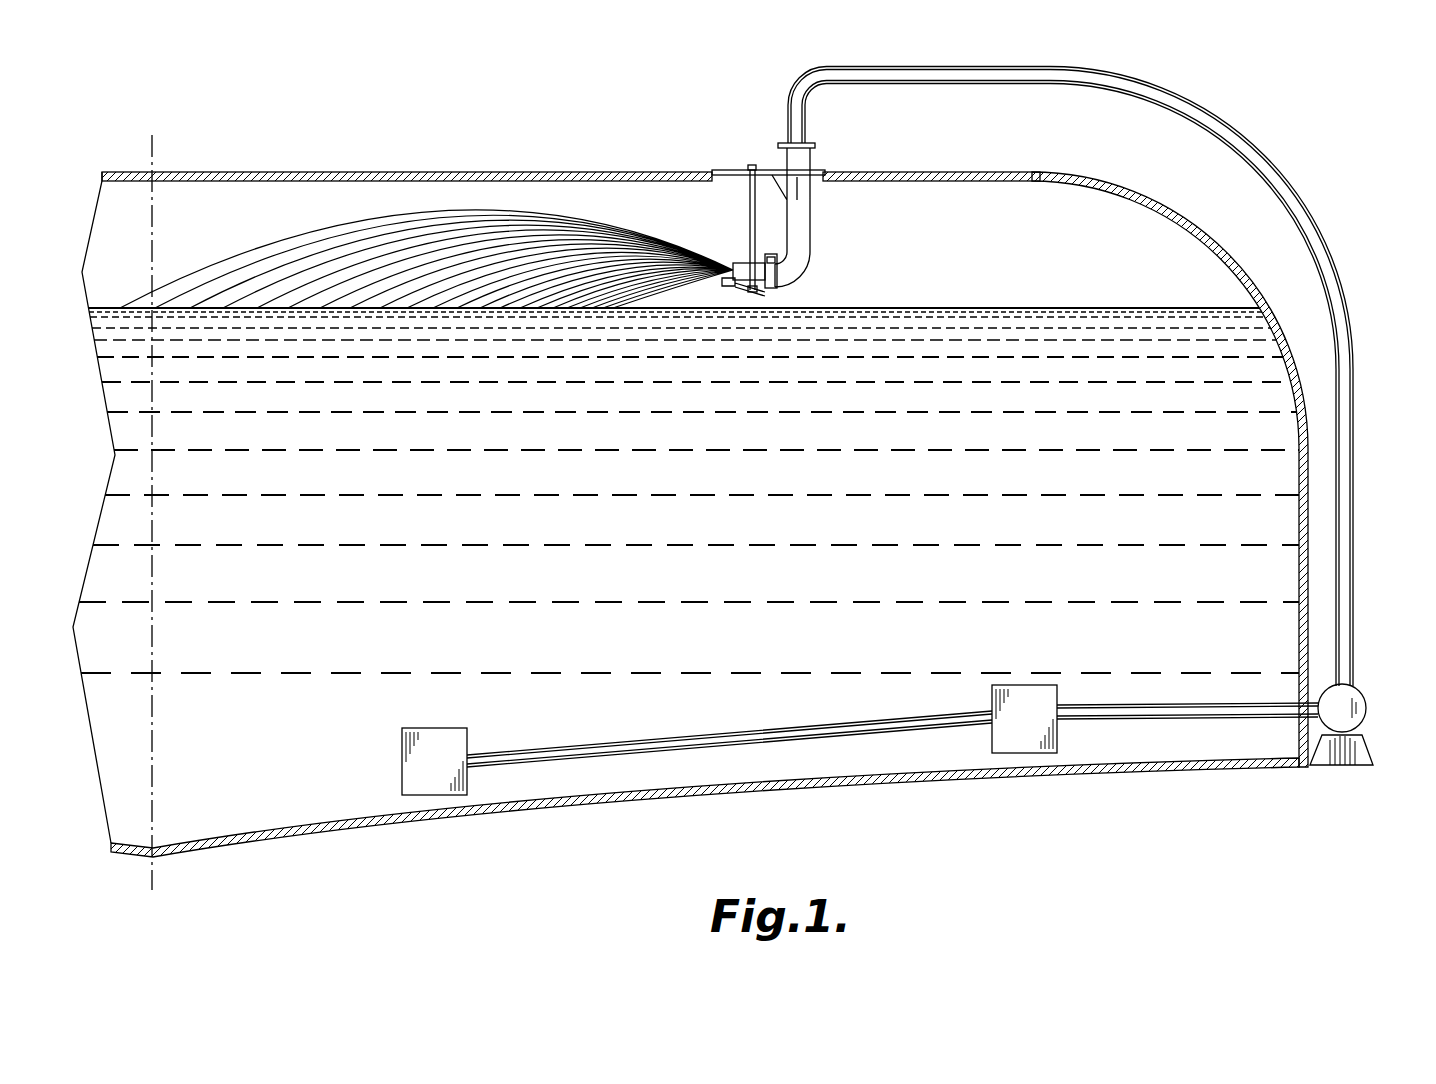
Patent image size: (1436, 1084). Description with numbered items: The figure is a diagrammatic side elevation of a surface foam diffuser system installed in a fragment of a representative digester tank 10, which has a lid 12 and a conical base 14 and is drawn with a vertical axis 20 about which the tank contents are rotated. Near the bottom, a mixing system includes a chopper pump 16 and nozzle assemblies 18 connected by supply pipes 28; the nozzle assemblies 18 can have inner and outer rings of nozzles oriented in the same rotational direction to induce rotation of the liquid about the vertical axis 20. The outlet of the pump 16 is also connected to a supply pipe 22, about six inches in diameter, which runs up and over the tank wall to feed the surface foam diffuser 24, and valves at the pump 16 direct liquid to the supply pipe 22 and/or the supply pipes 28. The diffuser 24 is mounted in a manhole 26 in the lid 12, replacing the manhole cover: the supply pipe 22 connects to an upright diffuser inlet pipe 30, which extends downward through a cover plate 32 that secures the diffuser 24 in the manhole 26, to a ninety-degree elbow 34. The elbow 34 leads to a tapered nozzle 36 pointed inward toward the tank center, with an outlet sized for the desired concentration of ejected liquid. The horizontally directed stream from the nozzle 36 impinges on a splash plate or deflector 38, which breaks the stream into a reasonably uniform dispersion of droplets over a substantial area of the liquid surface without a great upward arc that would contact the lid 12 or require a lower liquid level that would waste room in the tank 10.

The tank 10 is at (1222, 224).
The lid 12 is at (553, 172).
The conical base 14 is at (655, 795).
The chopper pump 16 is at (1370, 683).
The nozzle assemblies 18 is at (428, 796).
The vertical axis 20 is at (152, 138).
The supply pipe 22 is at (1352, 425).
The surface foam diffuser 24 is at (818, 240).
The manhole 26 is at (720, 187).
The supply pipes 28 is at (780, 742).
The diffuser inlet pipe 30 is at (808, 157).
The cover plate 32 is at (742, 170).
The 90° elbow 34 is at (798, 272).
The tapered nozzle 36 is at (742, 264).
The splash plate or deflector 38 is at (722, 288).